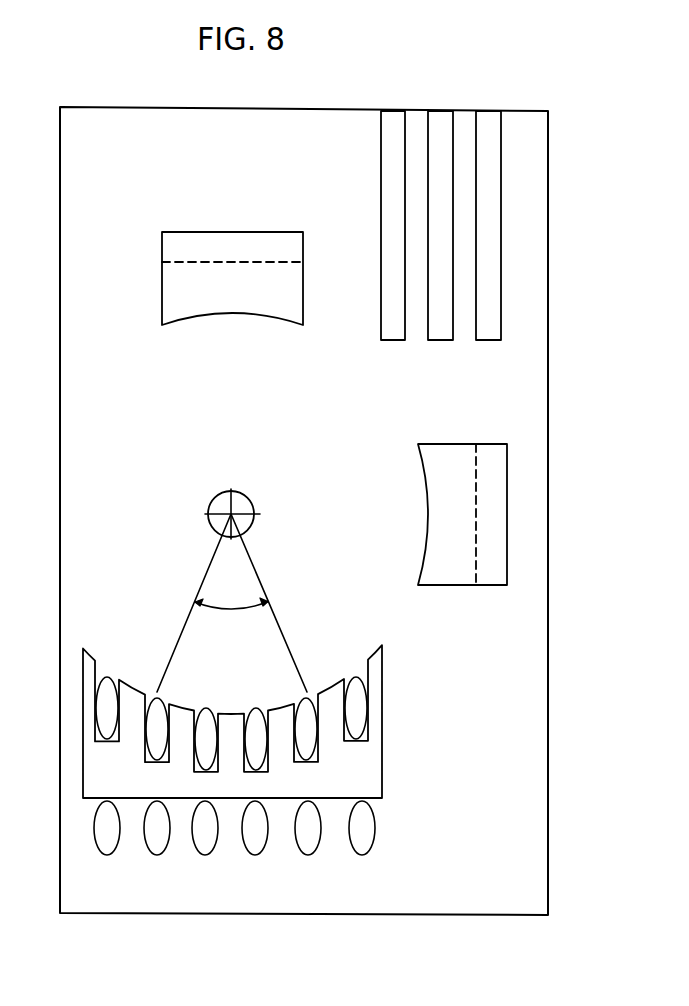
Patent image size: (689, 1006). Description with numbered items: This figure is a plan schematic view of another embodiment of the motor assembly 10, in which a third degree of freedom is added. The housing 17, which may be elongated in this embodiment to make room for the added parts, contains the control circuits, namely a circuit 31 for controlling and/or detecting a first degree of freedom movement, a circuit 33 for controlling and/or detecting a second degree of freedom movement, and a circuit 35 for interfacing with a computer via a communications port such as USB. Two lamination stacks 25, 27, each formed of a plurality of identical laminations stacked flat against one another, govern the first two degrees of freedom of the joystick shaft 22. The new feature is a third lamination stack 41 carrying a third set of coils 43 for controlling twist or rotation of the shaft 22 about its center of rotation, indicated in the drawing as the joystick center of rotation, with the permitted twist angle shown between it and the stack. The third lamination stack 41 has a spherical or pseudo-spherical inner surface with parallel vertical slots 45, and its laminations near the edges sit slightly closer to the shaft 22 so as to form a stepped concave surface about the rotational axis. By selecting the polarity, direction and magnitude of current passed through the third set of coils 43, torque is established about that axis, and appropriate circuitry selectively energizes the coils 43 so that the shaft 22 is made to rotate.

The assembly 10 is at (328, 487).
The housing 17 is at (550, 300).
The shaft 22 is at (210, 520).
The lamination stack 25 is at (287, 238).
The lamination stack 27 is at (497, 470).
The circuit for controlling and/or detecting a first degree of freedom movement 31 is at (394, 127).
The circuit for controlling and/or detecting a second degree of freedom movement 33 is at (441, 122).
The circuit for interfacing with a computer 35 is at (488, 122).
The third lamination stack 41 is at (95, 764).
The third set of coils 43 is at (360, 715).
The parallel vertical slots 45 is at (152, 702).